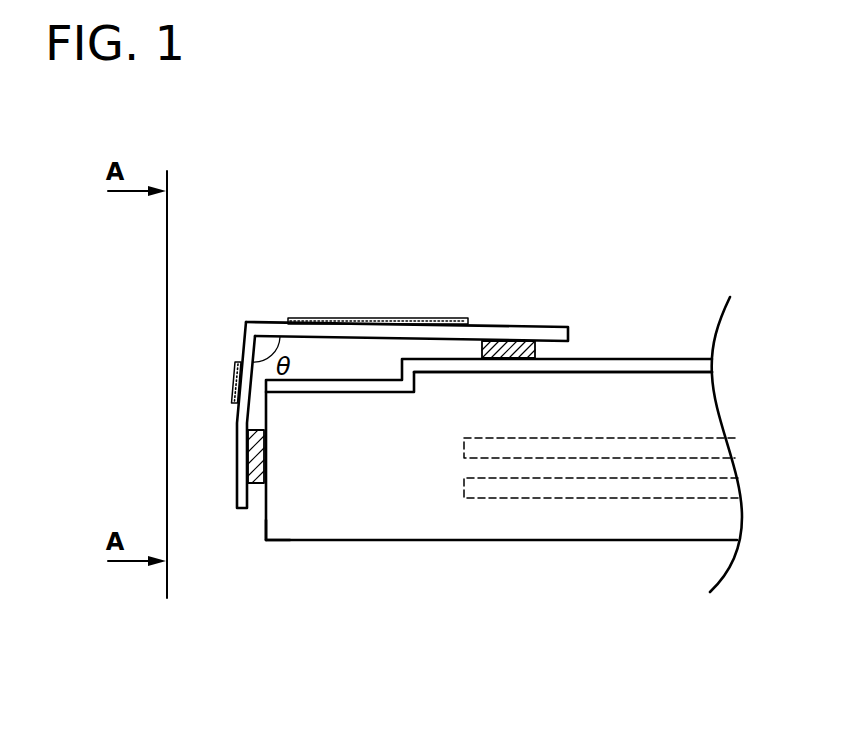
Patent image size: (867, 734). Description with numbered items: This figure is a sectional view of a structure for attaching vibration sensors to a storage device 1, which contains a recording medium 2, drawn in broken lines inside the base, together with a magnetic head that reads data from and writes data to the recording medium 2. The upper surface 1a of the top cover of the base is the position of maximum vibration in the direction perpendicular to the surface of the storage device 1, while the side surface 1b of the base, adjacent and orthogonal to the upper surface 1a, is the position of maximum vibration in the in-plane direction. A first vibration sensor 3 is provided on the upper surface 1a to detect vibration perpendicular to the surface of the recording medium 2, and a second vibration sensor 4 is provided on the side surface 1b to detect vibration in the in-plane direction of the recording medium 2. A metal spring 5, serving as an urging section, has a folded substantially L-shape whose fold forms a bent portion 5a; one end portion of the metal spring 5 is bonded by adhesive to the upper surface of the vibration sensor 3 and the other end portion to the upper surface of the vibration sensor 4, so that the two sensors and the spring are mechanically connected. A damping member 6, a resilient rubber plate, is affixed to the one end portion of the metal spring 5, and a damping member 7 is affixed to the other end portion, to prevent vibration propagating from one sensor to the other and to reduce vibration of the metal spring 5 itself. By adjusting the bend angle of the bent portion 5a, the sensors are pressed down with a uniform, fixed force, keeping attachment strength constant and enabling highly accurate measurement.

The storage device 1 is at (685, 317).
The upper surface of top cover 1a is at (618, 358).
The side surface of base 1b is at (266, 515).
The recording medium 2 is at (718, 446).
The first vibration sensor 3 is at (512, 341).
The second vibration sensor 4 is at (258, 456).
The metal spring 5 is at (553, 325).
The bent portion 5a is at (247, 321).
The damping member 6 is at (421, 318).
The damping member 7 is at (233, 385).